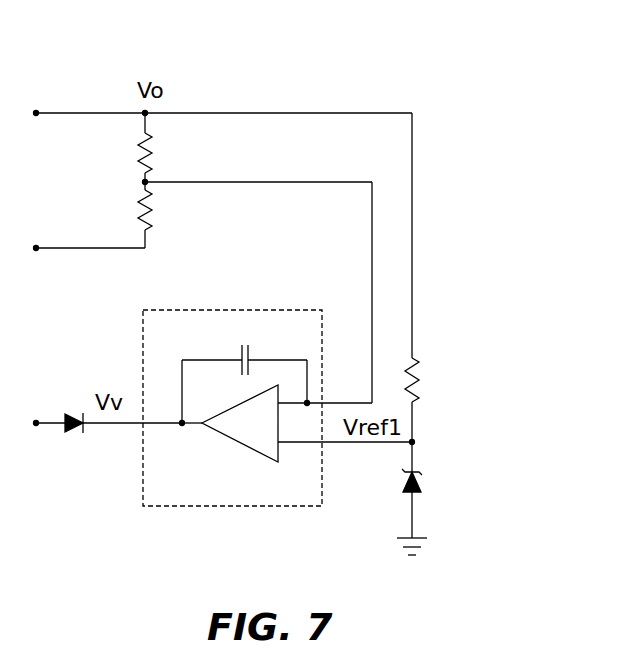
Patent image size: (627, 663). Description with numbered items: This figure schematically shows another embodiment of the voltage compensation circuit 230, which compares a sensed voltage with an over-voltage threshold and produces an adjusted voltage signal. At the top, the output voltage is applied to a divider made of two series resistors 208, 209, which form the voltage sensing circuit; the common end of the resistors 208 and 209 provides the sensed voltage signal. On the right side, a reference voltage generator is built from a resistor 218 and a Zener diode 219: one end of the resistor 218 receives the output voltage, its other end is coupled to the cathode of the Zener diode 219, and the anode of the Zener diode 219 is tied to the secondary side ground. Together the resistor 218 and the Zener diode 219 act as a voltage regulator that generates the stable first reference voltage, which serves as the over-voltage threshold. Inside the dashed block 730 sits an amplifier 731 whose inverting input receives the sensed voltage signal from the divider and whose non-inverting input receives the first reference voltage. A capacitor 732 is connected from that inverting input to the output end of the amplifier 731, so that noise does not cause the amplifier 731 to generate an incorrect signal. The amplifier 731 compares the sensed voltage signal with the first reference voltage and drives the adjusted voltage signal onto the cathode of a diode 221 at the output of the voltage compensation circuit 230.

The resistor 208 is at (117, 147).
The resistor 209 is at (117, 215).
The resistor 218 is at (447, 400).
The Zener diode 219 is at (445, 490).
The diode 221 is at (77, 446).
The voltage compensation circuit 230 is at (452, 61).
The amplifier block 730 is at (190, 507).
The amplifier 731 is at (221, 435).
The capacitor 732 is at (247, 375).